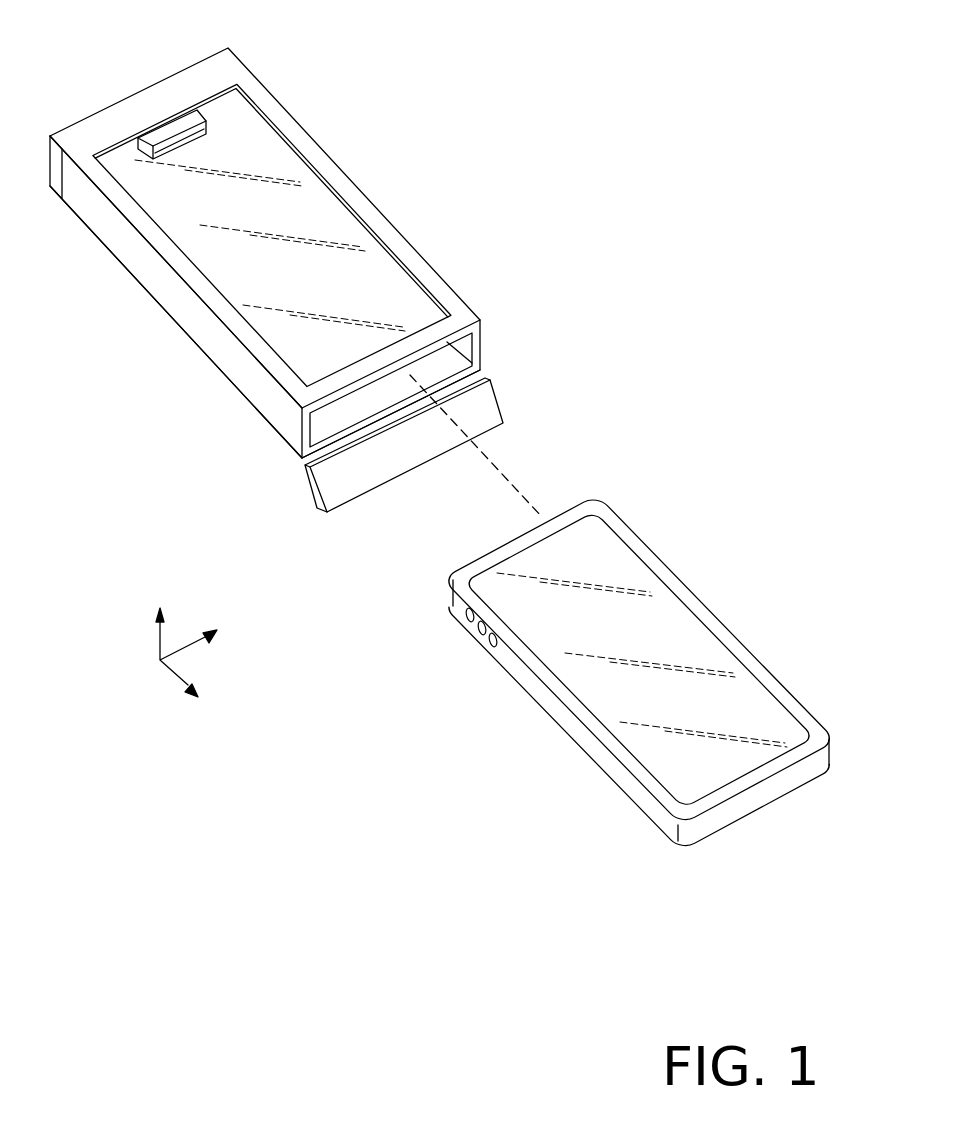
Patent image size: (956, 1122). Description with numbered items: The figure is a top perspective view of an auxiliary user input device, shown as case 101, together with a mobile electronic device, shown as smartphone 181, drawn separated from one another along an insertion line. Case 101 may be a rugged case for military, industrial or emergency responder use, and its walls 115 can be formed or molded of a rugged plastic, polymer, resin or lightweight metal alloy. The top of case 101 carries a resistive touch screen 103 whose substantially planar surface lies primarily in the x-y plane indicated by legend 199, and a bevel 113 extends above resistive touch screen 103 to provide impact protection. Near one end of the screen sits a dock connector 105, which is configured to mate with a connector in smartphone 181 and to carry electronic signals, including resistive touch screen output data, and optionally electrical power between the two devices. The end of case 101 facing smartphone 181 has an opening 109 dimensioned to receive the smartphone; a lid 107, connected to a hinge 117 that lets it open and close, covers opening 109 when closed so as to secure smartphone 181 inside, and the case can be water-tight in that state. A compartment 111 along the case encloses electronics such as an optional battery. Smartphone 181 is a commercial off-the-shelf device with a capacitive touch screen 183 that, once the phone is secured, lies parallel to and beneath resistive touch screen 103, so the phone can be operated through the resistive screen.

The case 101 is at (480, 166).
The resistive touch screen 103 is at (315, 281).
The dock connector 105 is at (187, 123).
The lid 107 is at (486, 405).
The opening 109 is at (330, 418).
The compartment 111 is at (193, 75).
The bevel 113 is at (193, 275).
The walls 115 is at (225, 340).
The hinge 117 is at (377, 427).
The smartphone 181 is at (750, 572).
The capacitive touch screen 183 is at (617, 638).
The legend 199 is at (150, 691).